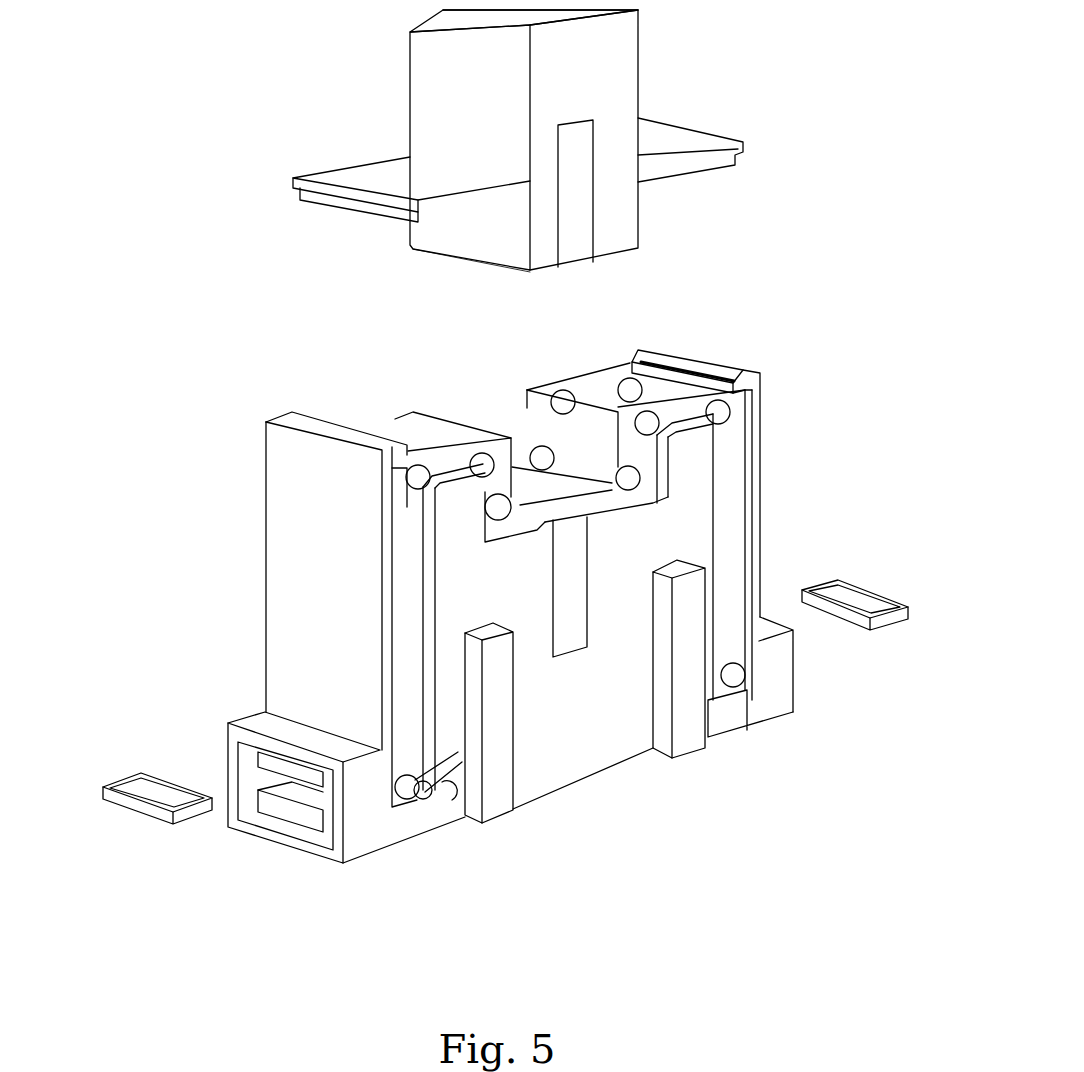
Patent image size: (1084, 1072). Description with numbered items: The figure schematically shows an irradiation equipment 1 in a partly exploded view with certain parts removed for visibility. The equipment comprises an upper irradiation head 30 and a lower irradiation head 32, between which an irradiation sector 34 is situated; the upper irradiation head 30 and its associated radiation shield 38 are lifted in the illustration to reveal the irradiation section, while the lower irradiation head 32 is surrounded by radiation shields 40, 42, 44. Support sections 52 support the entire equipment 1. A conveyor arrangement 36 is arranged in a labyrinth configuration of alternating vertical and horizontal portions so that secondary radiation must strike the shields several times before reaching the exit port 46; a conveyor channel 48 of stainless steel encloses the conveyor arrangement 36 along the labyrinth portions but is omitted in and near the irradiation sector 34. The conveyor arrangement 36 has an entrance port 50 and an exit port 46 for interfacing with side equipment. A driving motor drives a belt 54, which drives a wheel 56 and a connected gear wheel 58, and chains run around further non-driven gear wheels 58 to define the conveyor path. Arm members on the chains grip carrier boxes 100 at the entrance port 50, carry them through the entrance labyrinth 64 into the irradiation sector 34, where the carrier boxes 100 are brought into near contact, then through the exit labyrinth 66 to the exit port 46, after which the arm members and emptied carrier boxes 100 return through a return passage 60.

The irradiation equipment 1 is at (302, 287).
The upper irradiation head 30 is at (577, 245).
The lower irradiation head 32 is at (580, 643).
The irradiation sector 34 is at (545, 487).
The conveyor arrangement 36 is at (407, 503).
The radiation shield 38 is at (613, 42).
The radiation shield 40 is at (565, 763).
The radiation shield 42 is at (757, 370).
The radiation shield 44 is at (272, 473).
The exit port 46 is at (245, 758).
The conveyor channel 48 is at (387, 417).
The entrance port 50 is at (792, 655).
The support sections 52 is at (492, 805).
The belt 54 is at (452, 803).
The wheel 56 is at (425, 803).
The gear wheel 58 is at (418, 472).
The return passage 60 is at (308, 837).
The entrance labyrinth 64 is at (725, 578).
The exit labyrinth 66 is at (402, 630).
The carrier boxes 100 is at (890, 618).